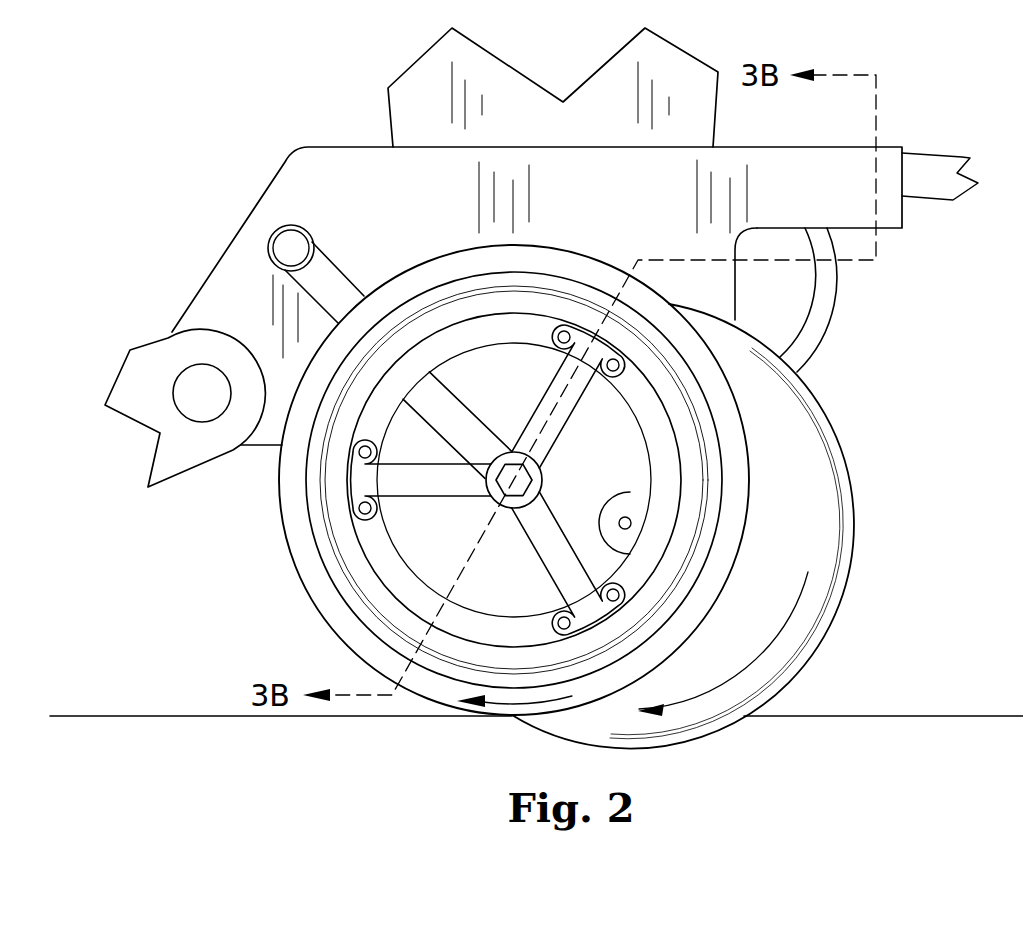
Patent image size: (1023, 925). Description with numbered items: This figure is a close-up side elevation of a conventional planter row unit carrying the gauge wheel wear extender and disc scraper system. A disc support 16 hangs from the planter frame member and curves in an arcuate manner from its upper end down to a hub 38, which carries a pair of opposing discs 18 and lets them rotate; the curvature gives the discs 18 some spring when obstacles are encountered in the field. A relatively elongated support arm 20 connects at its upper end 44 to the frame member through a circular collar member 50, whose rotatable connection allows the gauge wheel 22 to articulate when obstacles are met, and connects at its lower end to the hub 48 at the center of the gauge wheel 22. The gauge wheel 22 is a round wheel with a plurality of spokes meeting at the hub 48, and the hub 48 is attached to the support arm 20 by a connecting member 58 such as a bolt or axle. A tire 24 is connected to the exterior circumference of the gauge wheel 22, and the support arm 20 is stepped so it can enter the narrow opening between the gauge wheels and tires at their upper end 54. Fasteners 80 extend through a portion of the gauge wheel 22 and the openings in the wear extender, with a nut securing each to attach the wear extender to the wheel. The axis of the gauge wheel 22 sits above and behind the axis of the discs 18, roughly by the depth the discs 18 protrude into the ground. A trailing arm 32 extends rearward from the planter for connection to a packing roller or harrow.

The disc support 16 is at (823, 305).
The discs 18 is at (832, 500).
The support arm 20 is at (332, 283).
The gauge wheel 22 is at (368, 528).
The tire 24 is at (313, 586).
The trailing arm 32 is at (160, 350).
The hub 38 is at (632, 523).
The upper end 44 is at (291, 226).
The hub 48 is at (543, 477).
The circular collar member 50 is at (269, 253).
The upper end 54 is at (563, 250).
The connecting member 58 is at (478, 533).
The fasteners 80 is at (357, 508).